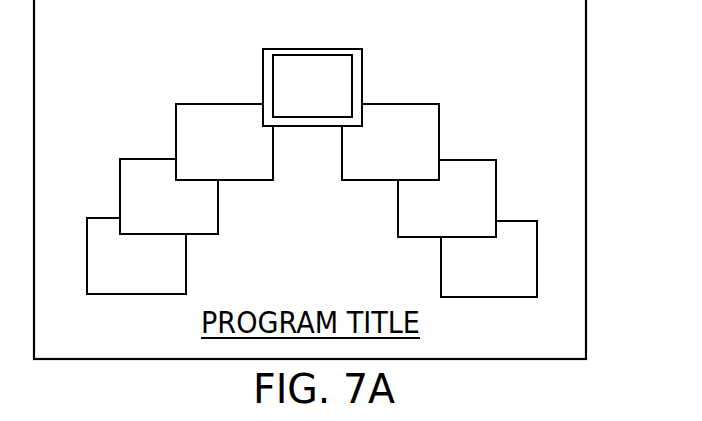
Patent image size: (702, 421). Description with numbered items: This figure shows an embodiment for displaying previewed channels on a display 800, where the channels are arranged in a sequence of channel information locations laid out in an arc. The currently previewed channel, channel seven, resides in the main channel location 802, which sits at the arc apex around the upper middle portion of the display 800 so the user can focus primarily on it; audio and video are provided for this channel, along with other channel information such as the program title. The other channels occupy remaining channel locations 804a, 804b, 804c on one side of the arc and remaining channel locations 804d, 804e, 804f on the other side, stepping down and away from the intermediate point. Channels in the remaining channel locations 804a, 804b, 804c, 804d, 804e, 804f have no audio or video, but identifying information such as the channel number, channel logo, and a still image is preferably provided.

The display 800 is at (578, 53).
The main channel location 802 is at (345, 49).
The remaining channel location 804a is at (110, 218).
The remaining channel location 804b is at (140, 159).
The remaining channel location 804c is at (188, 104).
The remaining channel location 804d is at (419, 104).
The remaining channel location 804e is at (476, 160).
The remaining channel location 804f is at (506, 220).